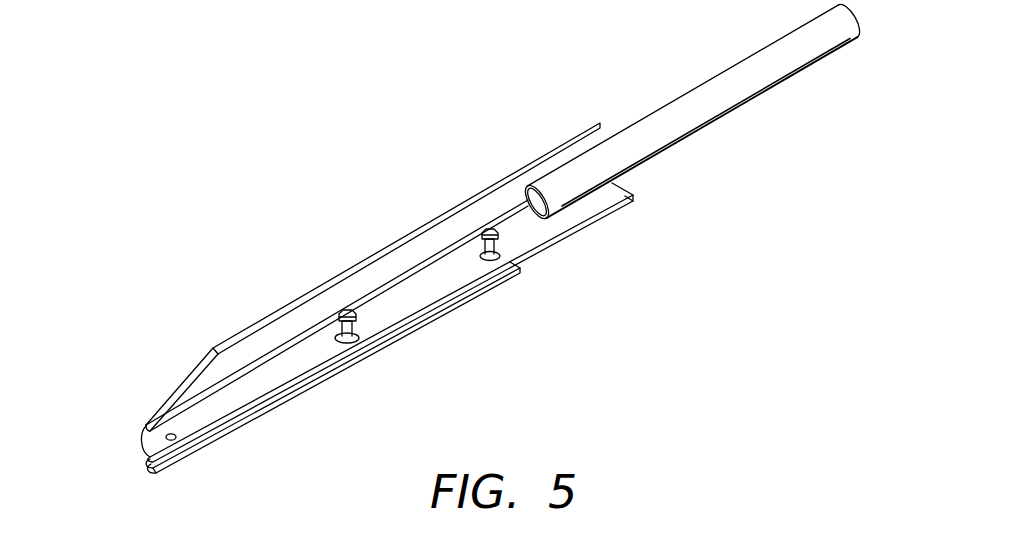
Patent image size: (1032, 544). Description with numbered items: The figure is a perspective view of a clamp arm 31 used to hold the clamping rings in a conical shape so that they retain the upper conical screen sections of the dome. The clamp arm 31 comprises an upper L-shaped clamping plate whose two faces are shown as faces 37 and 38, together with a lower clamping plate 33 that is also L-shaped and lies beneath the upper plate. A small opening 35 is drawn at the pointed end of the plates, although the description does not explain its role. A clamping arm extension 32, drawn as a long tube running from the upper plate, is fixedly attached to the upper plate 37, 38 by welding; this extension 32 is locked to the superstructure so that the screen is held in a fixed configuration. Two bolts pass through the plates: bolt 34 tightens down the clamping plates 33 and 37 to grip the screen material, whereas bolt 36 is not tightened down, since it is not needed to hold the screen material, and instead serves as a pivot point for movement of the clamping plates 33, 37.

The clamp arm 31 is at (455, 172).
The clamping arm extension 32 is at (757, 80).
The lower clamping plate 33 is at (483, 289).
The bolt 34 is at (341, 311).
The mounting hole 35 is at (152, 449).
The bolt 36 is at (488, 228).
The upper clamping plate face 37 is at (303, 365).
The upper clamping plate face 38 is at (388, 273).